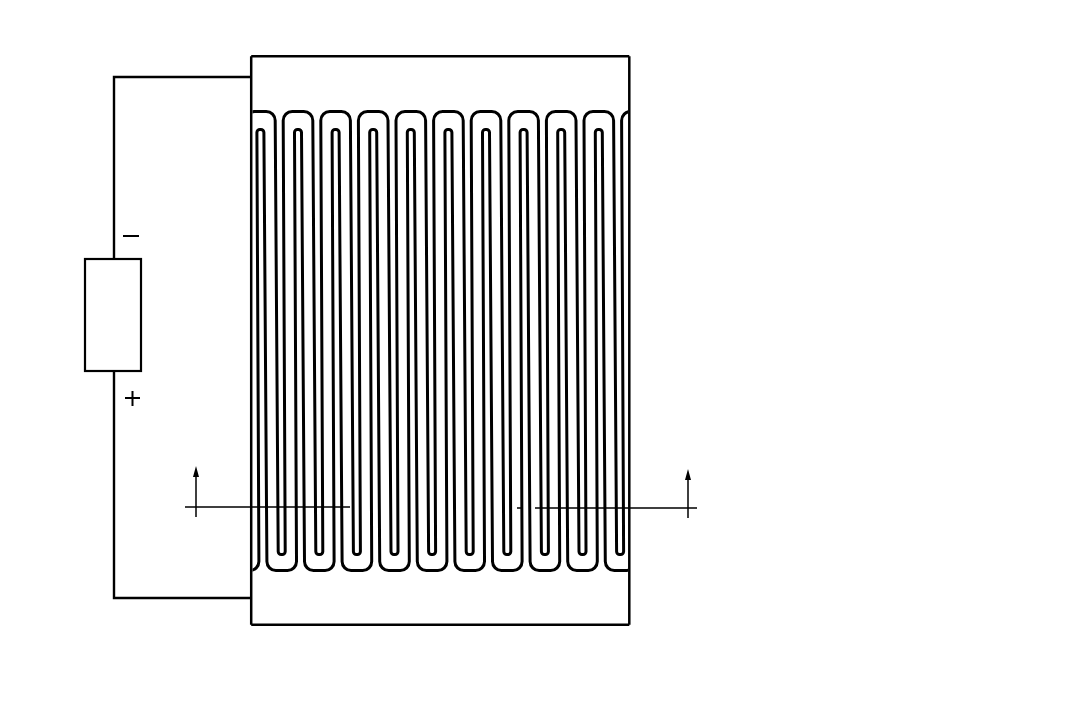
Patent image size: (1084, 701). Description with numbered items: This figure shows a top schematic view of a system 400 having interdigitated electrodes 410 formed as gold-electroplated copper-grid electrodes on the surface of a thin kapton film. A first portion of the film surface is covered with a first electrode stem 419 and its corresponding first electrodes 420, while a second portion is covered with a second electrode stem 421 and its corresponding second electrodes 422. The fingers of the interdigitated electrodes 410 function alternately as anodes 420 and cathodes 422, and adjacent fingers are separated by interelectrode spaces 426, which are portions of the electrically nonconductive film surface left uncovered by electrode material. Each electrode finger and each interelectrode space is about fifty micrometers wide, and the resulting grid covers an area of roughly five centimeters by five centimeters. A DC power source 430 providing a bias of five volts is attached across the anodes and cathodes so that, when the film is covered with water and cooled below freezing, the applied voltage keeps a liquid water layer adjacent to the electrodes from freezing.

The system 400 is at (200, 31).
The interdigitated electrodes 410 is at (231, 134).
The first electrode stem 419 is at (603, 596).
The first electrodes 420 is at (598, 147).
The second electrode stem 421 is at (617, 79).
The second electrodes 422 is at (583, 185).
The interelectrode spaces 426 is at (608, 223).
The DC power supply 430 is at (85, 309).